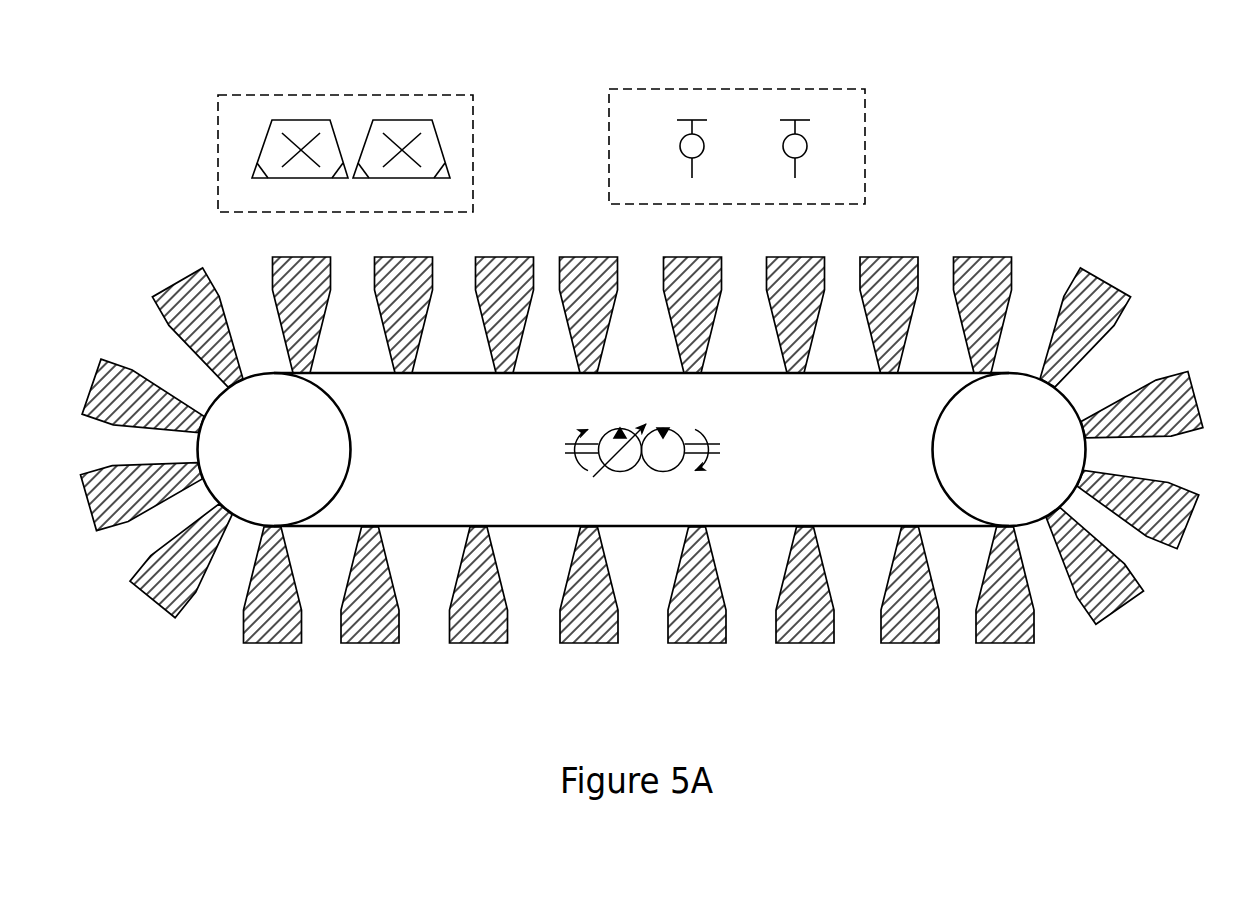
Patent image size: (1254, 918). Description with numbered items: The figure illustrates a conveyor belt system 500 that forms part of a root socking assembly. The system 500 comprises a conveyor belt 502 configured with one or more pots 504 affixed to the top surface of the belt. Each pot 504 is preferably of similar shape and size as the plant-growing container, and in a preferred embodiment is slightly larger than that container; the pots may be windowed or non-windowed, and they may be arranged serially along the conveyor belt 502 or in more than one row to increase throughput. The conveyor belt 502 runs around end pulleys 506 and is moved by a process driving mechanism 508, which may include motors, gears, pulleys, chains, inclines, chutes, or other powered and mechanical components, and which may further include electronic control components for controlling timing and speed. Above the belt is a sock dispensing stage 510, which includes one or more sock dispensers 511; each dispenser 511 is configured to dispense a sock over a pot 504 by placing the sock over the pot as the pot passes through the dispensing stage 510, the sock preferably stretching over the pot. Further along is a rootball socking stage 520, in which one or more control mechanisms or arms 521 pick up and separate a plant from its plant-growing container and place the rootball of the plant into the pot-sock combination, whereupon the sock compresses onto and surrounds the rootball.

The conveyor belt system 500 is at (642, 409).
The conveyor belt 502 is at (847, 528).
The pot 504 is at (885, 257).
The pulleys 506 is at (262, 497).
The process driving mechanism 508 is at (575, 495).
The sock dispensing stage 510 is at (341, 125).
The sock dispenser 511 is at (277, 138).
The rootball socking stage 520 is at (765, 123).
The control mechanism or arm 521 is at (683, 140).